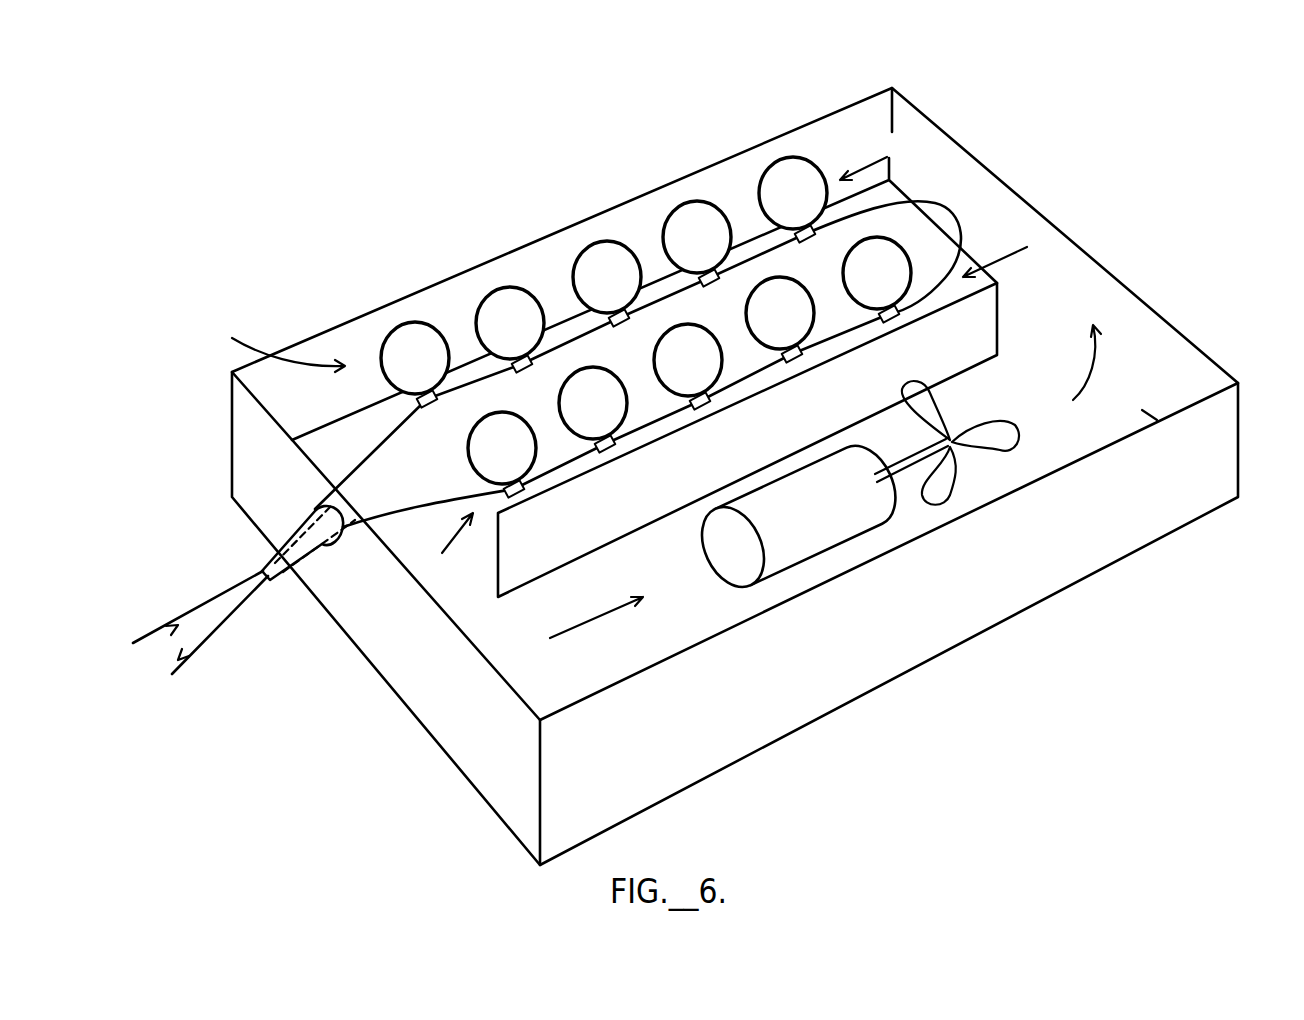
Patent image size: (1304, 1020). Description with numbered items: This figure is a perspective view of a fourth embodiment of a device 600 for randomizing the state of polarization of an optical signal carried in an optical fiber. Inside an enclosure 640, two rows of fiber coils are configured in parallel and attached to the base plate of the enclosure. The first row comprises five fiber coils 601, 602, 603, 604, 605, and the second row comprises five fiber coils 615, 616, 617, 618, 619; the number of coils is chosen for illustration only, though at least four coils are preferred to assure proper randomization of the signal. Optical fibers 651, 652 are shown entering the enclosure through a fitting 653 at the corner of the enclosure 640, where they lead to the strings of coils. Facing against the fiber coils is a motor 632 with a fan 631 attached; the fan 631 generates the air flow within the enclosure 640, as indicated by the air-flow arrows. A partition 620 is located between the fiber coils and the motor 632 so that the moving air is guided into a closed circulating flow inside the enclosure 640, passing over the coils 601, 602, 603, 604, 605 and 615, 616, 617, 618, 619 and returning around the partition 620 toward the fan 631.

The light source assembly 600 is at (417, 103).
The fiber coil 601 is at (413, 322).
The fiber coil 602 is at (524, 284).
The fiber coil 603 is at (610, 243).
The fiber coil 604 is at (700, 200).
The fiber coil 605 is at (790, 155).
The fiber coil 615 is at (482, 410).
The fiber coil 616 is at (580, 388).
The fiber coil 617 is at (673, 335).
The fiber coil 618 is at (763, 283).
The fiber coil 619 is at (905, 248).
The partition 620 is at (595, 523).
The fan 631 is at (953, 430).
The motor 632 is at (847, 543).
The enclosure 640 is at (1145, 300).
The optical fiber 651 is at (217, 598).
The optical fiber 652 is at (203, 633).
The fiber grommet 653 is at (285, 540).